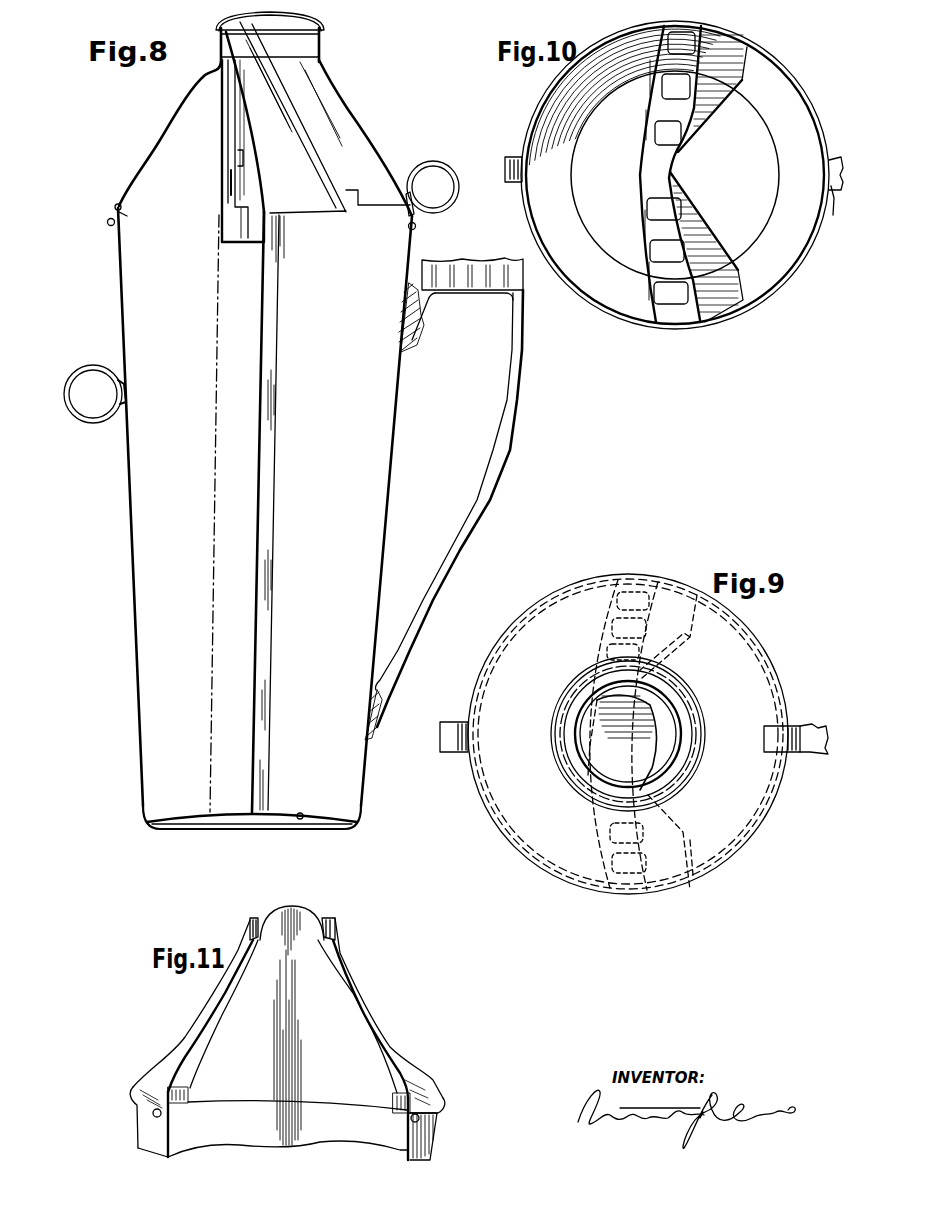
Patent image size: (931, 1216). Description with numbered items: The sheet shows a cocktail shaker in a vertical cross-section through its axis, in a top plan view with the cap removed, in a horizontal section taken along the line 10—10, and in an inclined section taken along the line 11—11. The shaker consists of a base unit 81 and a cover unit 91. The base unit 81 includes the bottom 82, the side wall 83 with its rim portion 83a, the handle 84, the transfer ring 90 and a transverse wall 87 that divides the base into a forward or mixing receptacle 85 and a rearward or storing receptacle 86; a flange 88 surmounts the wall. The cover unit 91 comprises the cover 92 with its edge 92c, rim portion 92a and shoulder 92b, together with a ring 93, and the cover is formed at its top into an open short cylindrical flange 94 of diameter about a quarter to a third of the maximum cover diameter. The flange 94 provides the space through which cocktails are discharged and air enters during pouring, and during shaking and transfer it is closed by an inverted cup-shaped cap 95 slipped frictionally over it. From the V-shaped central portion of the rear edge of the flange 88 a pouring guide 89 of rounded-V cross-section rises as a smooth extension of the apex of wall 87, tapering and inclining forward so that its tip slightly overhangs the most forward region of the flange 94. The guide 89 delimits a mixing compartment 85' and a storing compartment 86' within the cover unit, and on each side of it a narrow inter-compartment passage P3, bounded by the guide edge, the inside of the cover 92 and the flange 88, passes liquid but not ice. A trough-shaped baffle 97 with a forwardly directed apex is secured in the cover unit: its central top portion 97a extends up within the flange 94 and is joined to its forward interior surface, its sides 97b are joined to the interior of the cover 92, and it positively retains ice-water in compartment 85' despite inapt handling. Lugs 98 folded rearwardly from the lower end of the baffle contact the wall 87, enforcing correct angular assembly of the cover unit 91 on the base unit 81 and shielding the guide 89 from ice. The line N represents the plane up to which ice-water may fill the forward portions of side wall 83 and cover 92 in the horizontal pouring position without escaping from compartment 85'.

In FIG. 8, the base unit 81 is at (122, 611).
In FIG. 8, the bottom 82 is at (296, 820).
In FIG. 10, the bottom 82 is at (748, 155).
In FIG. 8, the side wall 83 is at (393, 452).
In FIG. 10, the side wall 83 is at (792, 118).
In FIG. 11, the side wall 83 is at (436, 1138).
In FIG. 8, the rim portion 83a is at (409, 228).
In FIG. 10, the rim portion 83a is at (790, 95).
In FIG. 11, the rim portion 83a is at (432, 1150).
In FIG. 8, the handle 84 is at (458, 508).
In FIG. 10, the handle 84 is at (832, 210).
In FIG. 9, the handle 84 is at (812, 724).
In FIG. 8, the mixing receptacle 85 is at (124, 507).
In FIG. 8, the mixing compartment 85' is at (126, 660).
In FIG. 8, the storing receptacle 86 is at (395, 417).
In FIG. 8, the storing compartment 86' is at (381, 575).
In FIG. 8, the transverse wall 87 is at (250, 512).
In FIG. 11, the transverse wall 87 is at (276, 1059).
In FIG. 8, the flange 88 is at (338, 205).
In FIG. 10, the flange 88 is at (752, 68).
In FIG. 9, the flange 88 is at (676, 848).
In FIG. 11, the flange 88 is at (180, 1106).
In FIG. 8, the pouring guide 89 is at (282, 128).
In FIG. 10, the pouring guide 89 is at (695, 218).
In FIG. 9, the pouring guide 89 is at (608, 758).
In FIG. 11, the pouring guide 89 is at (280, 945).
In FIG. 8, the transfer ring 90 is at (92, 422).
In FIG. 10, the transfer ring 90 is at (512, 156).
In FIG. 9, the transfer ring 90 is at (455, 752).
In FIG. 8, the cover unit 91 is at (389, 141).
In FIG. 9, the cover unit 91 is at (550, 645).
In FIG. 11, the cover unit 91 is at (386, 983).
In FIG. 8, the cover 92 is at (342, 107).
In FIG. 9, the cover 92 is at (566, 615).
In FIG. 11, the cover 92 is at (385, 1028).
In FIG. 8, the rim portion 92a is at (118, 204).
In FIG. 10, the rim portion 92a is at (765, 80).
In FIG. 11, the rim portion 92a is at (432, 1090).
In FIG. 8, the shoulder 92b is at (122, 212).
In FIG. 8, the edge 92c is at (110, 226).
In FIG. 9, the edge 92c is at (542, 598).
In FIG. 11, the edge 92c is at (440, 1104).
In FIG. 8, the ring 93 is at (446, 166).
In FIG. 9, the ring 93 is at (786, 760).
In FIG. 8, the cylindrical flange 94 is at (318, 48).
In FIG. 9, the cylindrical flange 94 is at (678, 722).
In FIG. 11, the cylindrical flange 94 is at (335, 930).
In FIG. 8, the cap 95 is at (322, 22).
In FIG. 8, the baffle 97 is at (229, 151).
In FIG. 10, the baffle 97 is at (651, 174).
In FIG. 9, the baffle 97 is at (610, 735).
In FIG. 8, the central top portion 97a is at (212, 66).
In FIG. 8, the sides 97b is at (237, 156).
In FIG. 8, the lugs 98 is at (250, 245).
In FIG. 10, the lugs 98 is at (680, 98).
In FIG. 9, the lugs 98 is at (628, 630).
In FIG. 8, the plane-representing line N is at (215, 528).
In FIG. 11, the inter-compartment passage P3 is at (188, 1060).
In FIG. 8, the section line 10 is at (473, 217).
In FIG. 8, the section line 11 is at (218, 36).